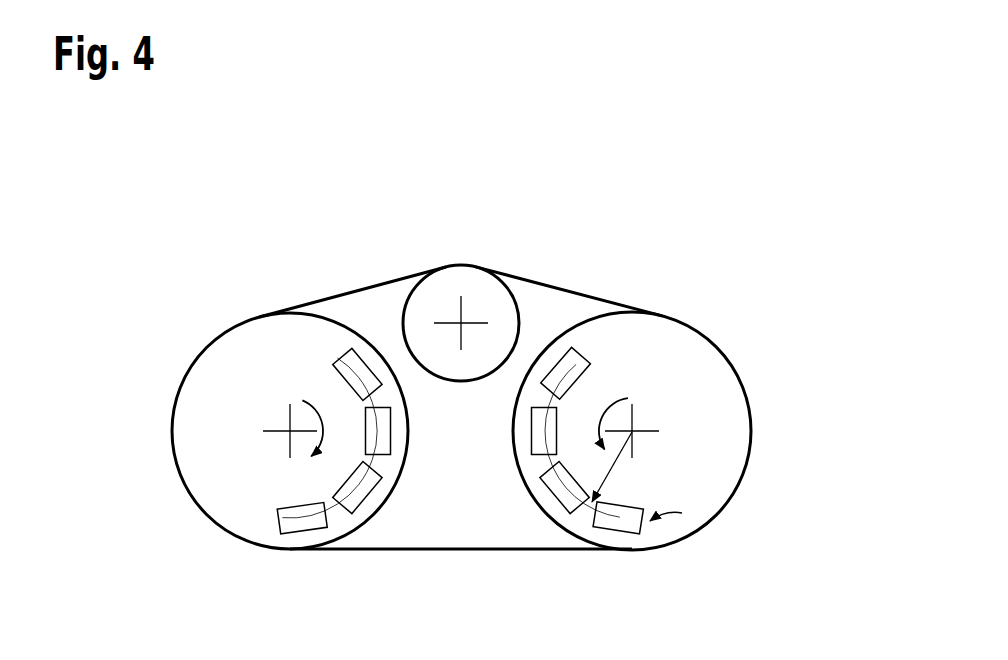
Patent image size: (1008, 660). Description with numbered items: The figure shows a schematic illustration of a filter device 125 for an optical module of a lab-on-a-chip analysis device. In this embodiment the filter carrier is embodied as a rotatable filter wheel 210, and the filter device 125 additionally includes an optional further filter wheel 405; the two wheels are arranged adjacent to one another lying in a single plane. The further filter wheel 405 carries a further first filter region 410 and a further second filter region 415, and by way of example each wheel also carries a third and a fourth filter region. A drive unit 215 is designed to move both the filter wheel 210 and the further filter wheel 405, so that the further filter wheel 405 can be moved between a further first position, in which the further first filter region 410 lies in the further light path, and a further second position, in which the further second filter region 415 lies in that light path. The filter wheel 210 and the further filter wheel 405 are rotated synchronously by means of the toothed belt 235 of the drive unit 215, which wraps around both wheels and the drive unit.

The filter device 125 is at (357, 349).
The toothed belt 235 is at (337, 297).
The drive unit 215 is at (438, 247).
The filter wheel 210 is at (203, 382).
The further filter wheel 405 is at (692, 480).
The further second filter region 415 is at (555, 507).
The further first filter region 410 is at (628, 535).